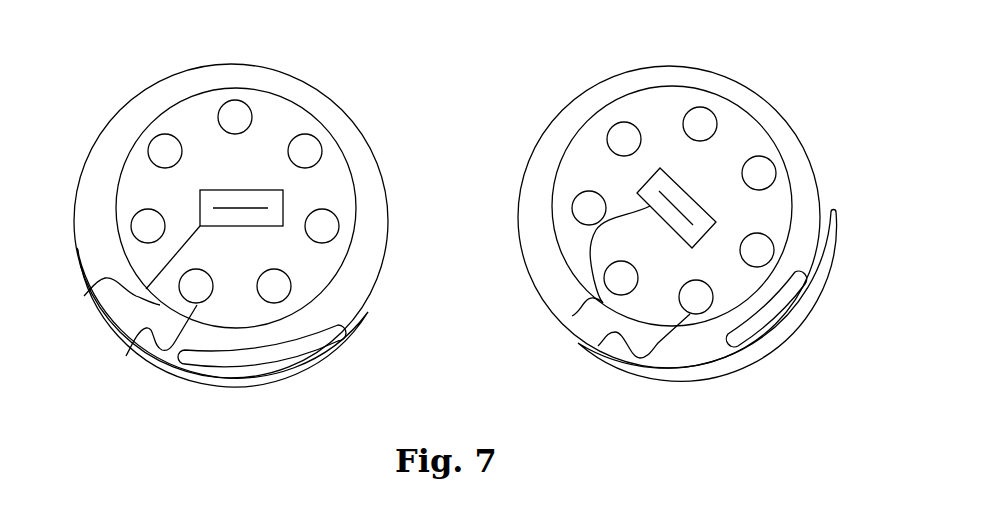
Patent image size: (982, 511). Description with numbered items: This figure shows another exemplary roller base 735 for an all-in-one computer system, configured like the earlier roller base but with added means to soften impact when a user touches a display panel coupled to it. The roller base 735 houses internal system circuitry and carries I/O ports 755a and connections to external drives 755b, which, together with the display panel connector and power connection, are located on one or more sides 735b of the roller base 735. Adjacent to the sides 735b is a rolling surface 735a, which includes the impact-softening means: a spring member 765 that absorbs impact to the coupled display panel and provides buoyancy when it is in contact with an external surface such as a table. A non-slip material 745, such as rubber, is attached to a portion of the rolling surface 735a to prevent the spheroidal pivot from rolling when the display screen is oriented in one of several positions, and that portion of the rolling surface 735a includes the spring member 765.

The roller base 735 is at (168, 77).
The rolling surface 735a is at (267, 68).
The sides 735b is at (312, 123).
The non-slip material 745 is at (303, 364).
The I/O ports 755a is at (126, 356).
The connections to external drives 755b is at (84, 296).
The spring member 765 is at (368, 312).